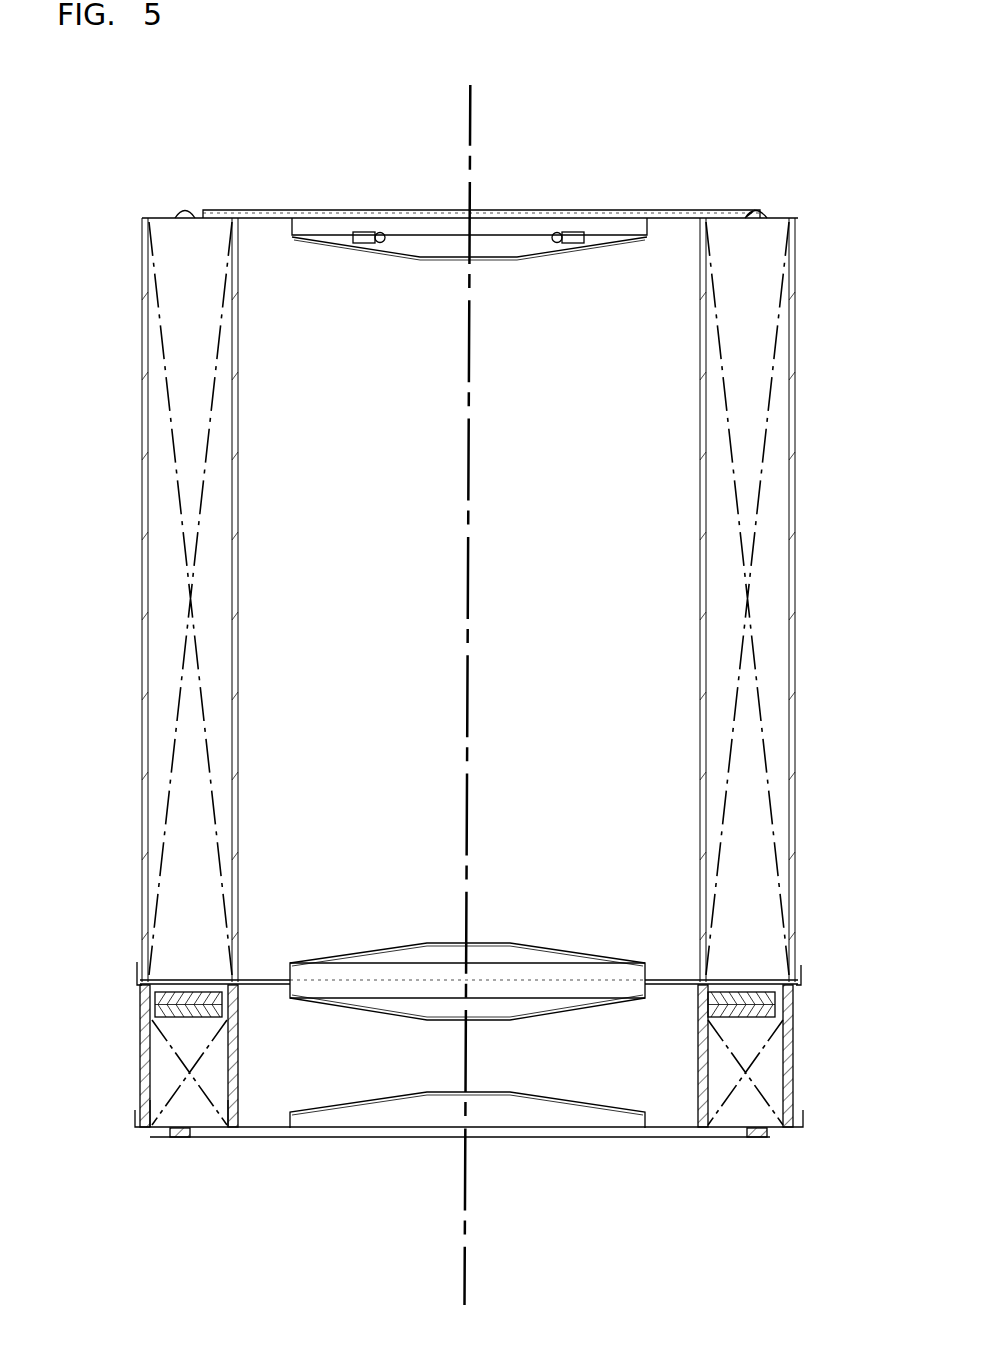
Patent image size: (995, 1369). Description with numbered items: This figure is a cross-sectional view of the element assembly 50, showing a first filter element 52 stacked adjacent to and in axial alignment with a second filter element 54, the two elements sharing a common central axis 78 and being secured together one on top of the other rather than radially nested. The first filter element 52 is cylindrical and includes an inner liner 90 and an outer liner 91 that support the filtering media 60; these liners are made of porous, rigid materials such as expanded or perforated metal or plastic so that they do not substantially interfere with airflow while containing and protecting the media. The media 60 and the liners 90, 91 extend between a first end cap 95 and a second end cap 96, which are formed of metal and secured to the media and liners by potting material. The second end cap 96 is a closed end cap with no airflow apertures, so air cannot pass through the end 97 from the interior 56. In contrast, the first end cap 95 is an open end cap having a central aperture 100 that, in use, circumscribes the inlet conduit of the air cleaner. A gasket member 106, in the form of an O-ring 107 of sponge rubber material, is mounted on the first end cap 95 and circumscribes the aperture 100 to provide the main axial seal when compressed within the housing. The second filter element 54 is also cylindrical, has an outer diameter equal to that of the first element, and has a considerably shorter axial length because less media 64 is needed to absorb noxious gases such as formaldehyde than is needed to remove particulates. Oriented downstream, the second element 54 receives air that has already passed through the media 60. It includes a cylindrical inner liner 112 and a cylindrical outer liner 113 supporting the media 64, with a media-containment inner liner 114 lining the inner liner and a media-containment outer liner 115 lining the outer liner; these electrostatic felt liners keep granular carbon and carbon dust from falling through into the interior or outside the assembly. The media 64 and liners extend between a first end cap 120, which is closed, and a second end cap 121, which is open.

The element assembly 50 is at (386, 130).
The first filter element 52 is at (806, 533).
The second filter element 54 is at (810, 1027).
The interior 56 is at (238, 604).
The filtering media 60 is at (770, 580).
The media 64 is at (163, 1058).
The common central axis 78 is at (466, 1183).
The inner liner 90 is at (700, 432).
The outer liner 91 is at (795, 413).
The first end cap 95 is at (275, 217).
The second end cap 96 is at (585, 958).
The end 97 is at (483, 942).
The central aperture 100 is at (508, 256).
The gasket member 106 is at (186, 213).
The O-ring 107 is at (690, 216).
The cylindrical inner liner 112 is at (233, 1110).
The cylindrical outer liner 113 is at (140, 1093).
The media-containment inner liner 114 is at (157, 1110).
The media-containment outer liner 115 is at (226, 1105).
The first end cap 120 is at (290, 990).
The second end cap 121 is at (277, 1128).